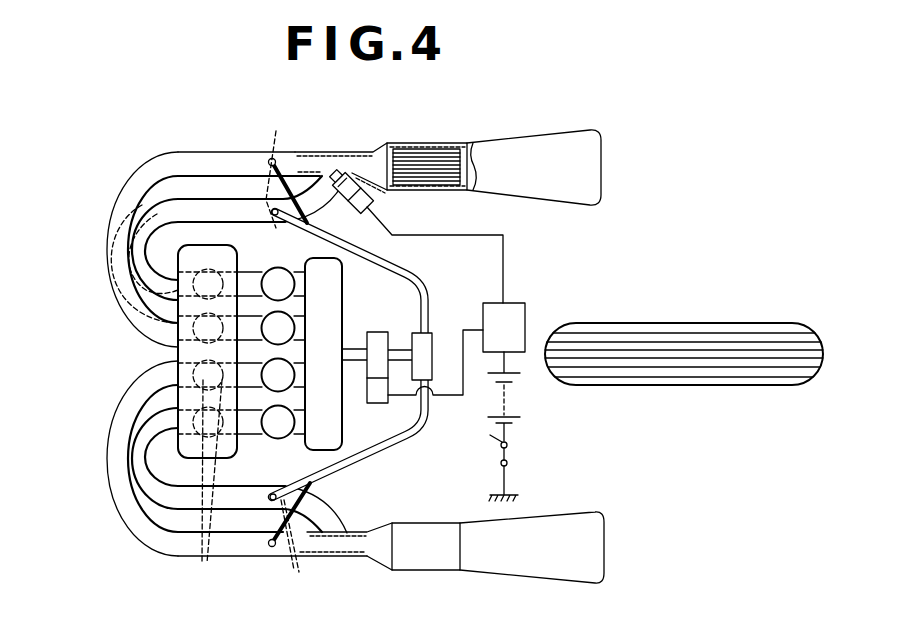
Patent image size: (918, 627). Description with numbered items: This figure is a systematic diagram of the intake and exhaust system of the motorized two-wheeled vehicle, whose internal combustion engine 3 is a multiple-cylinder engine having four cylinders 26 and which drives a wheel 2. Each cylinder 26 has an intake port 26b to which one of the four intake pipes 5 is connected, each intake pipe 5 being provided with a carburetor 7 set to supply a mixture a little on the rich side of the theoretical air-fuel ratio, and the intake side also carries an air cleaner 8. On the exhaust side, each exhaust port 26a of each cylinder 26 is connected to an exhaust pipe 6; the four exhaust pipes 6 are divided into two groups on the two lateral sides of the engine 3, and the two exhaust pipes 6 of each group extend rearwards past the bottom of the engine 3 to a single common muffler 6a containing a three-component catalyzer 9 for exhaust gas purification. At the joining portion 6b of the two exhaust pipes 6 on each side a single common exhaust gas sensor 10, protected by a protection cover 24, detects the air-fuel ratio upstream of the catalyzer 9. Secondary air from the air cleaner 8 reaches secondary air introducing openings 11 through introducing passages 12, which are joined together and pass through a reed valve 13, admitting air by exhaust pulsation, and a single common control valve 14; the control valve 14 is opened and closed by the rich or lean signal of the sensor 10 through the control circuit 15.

The wheel 2 is at (627, 327).
The internal combustion engine 3 is at (178, 346).
The intake pipe 5 is at (247, 326).
The exhaust pipe 6 is at (200, 157).
The muffler 6a is at (443, 143).
The joining portion 6b is at (333, 152).
The carburetor 7 is at (270, 415).
The air cleaner 8 is at (331, 363).
The catalyzer 9 is at (410, 156).
The exhaust gas sensor 10 is at (350, 224).
The secondary air introducing opening 11 is at (286, 351).
The introducing passage 12 is at (428, 294).
The reed valve 13 is at (433, 348).
The control valve 14 is at (381, 340).
The control circuit 15 is at (527, 310).
The protection cover 24 is at (380, 196).
The cylinder 26 is at (280, 323).
The exhaust port 26a is at (114, 281).
The intake port 26b is at (202, 487).